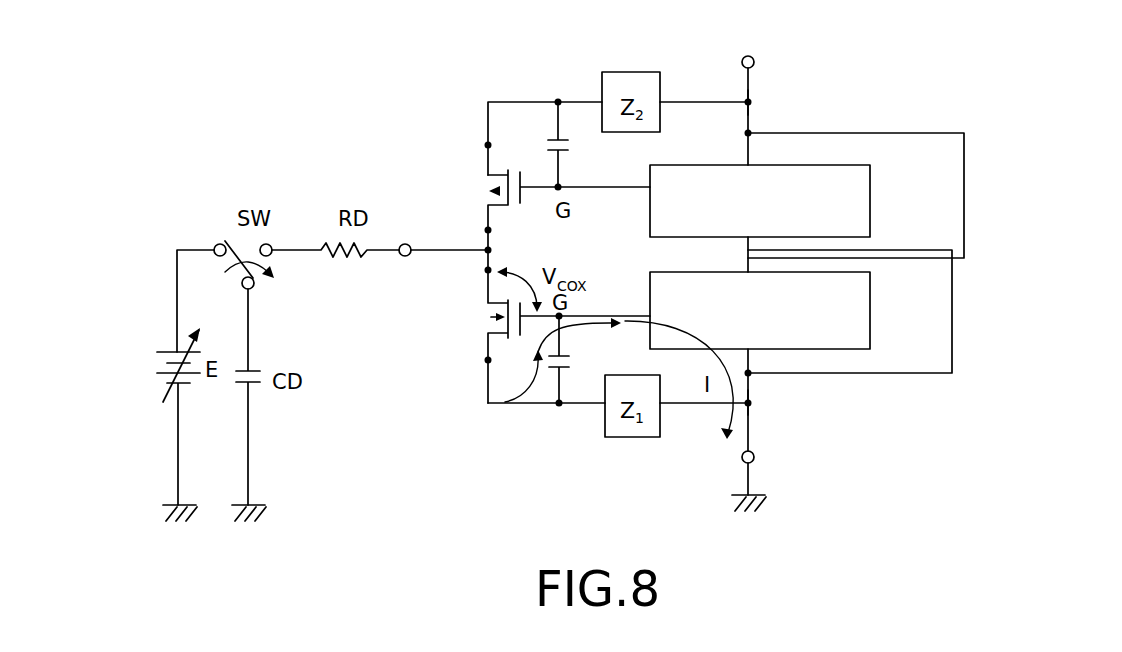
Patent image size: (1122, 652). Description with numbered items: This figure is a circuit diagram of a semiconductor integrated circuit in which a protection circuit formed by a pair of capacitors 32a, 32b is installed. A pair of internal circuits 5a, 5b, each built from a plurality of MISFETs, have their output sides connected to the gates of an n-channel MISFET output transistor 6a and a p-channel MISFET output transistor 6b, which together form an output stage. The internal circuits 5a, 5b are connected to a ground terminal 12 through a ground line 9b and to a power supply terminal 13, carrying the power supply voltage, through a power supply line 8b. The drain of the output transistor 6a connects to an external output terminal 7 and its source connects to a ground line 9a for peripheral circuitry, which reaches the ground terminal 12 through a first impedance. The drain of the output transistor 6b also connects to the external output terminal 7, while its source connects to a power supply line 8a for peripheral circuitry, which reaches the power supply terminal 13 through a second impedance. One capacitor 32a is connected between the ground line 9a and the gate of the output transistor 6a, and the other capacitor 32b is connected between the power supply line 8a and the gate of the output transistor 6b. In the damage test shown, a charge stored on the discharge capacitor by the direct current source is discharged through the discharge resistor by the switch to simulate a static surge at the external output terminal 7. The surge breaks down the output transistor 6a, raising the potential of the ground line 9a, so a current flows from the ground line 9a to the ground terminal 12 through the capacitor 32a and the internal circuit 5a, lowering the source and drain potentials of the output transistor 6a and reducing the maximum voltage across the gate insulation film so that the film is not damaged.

The internal circuit 5a is at (656, 271).
The internal circuit 5b is at (674, 163).
The n-channel MISFET output transistor 6a is at (492, 310).
The p-channel MISFET output transistor 6b is at (500, 181).
The external output terminal 7 is at (411, 246).
The power supply line for peripheral circuitry 8a is at (486, 111).
The power supply line 8b is at (750, 106).
The ground line for peripheral circuitry 9a is at (487, 389).
The ground line 9b is at (752, 393).
The ground terminal 12 is at (754, 457).
The power supply terminal 13 is at (754, 62).
The capacitor 32a is at (598, 366).
The capacitor 32b is at (569, 145).